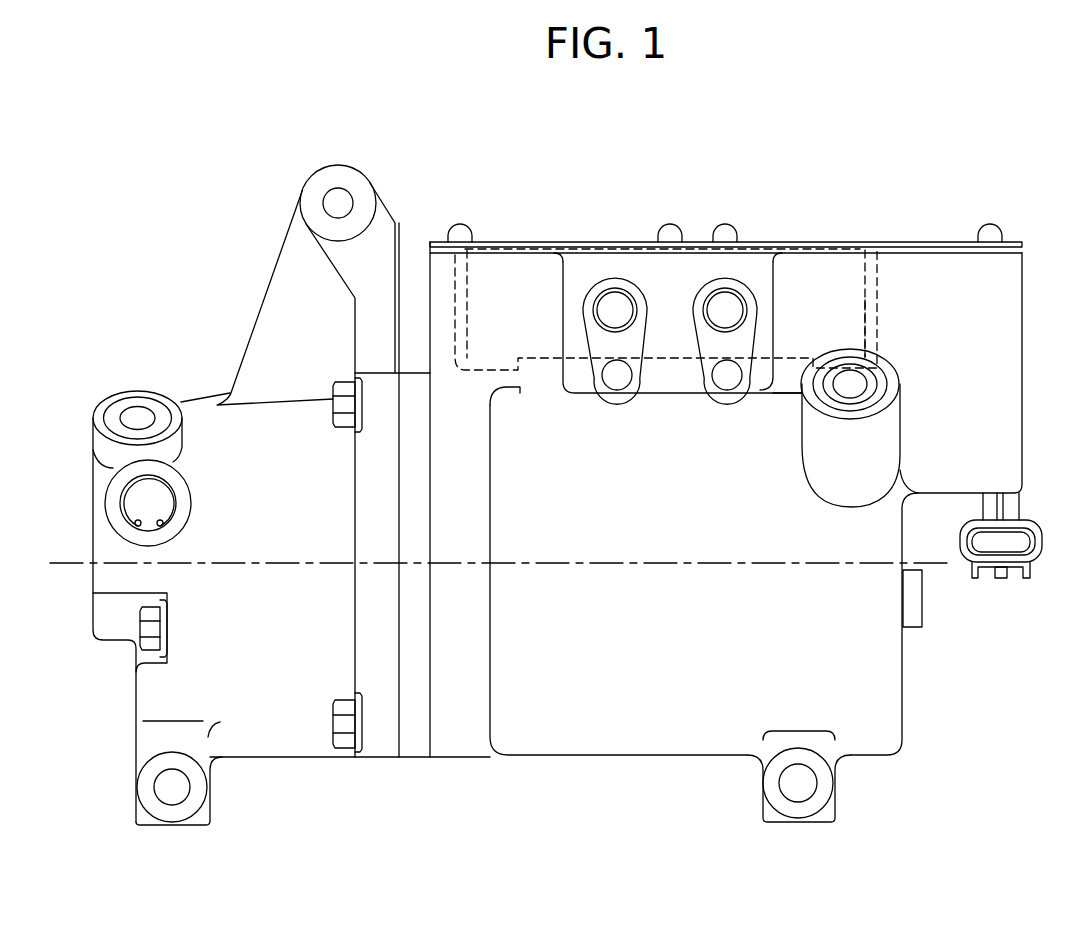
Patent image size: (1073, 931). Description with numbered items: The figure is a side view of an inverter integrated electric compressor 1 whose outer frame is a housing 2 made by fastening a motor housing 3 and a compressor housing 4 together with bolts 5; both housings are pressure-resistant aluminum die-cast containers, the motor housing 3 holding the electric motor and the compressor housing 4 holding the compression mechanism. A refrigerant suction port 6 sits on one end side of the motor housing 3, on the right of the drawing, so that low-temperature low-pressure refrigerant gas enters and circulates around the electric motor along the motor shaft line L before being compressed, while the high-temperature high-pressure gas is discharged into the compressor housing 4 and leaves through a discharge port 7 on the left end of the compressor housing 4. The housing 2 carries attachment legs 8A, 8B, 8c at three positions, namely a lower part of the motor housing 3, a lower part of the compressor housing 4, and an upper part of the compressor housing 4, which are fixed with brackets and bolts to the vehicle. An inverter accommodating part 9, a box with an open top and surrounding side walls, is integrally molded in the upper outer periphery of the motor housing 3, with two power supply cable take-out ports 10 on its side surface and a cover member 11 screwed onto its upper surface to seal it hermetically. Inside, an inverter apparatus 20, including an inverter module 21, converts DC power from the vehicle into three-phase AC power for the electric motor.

The inverter integrated electric compressor 1 is at (932, 218).
The housing 2 is at (547, 758).
The motor housing 3 is at (875, 685).
The compressor housing 4 is at (182, 692).
The bolts 5 is at (347, 737).
The refrigerant suction port 6 is at (855, 382).
The discharge port 7 is at (135, 413).
The attachment leg 8A is at (803, 782).
The attachment leg 8B is at (173, 785).
The attachment leg 8c is at (348, 180).
The inverter accommodating part 9 is at (852, 270).
The power supply cable take-out ports 10 is at (613, 300).
The cover member 11 is at (517, 243).
The inverter apparatus 20 is at (690, 247).
The inverter module 21 is at (865, 317).
The motor shaft line L is at (703, 562).